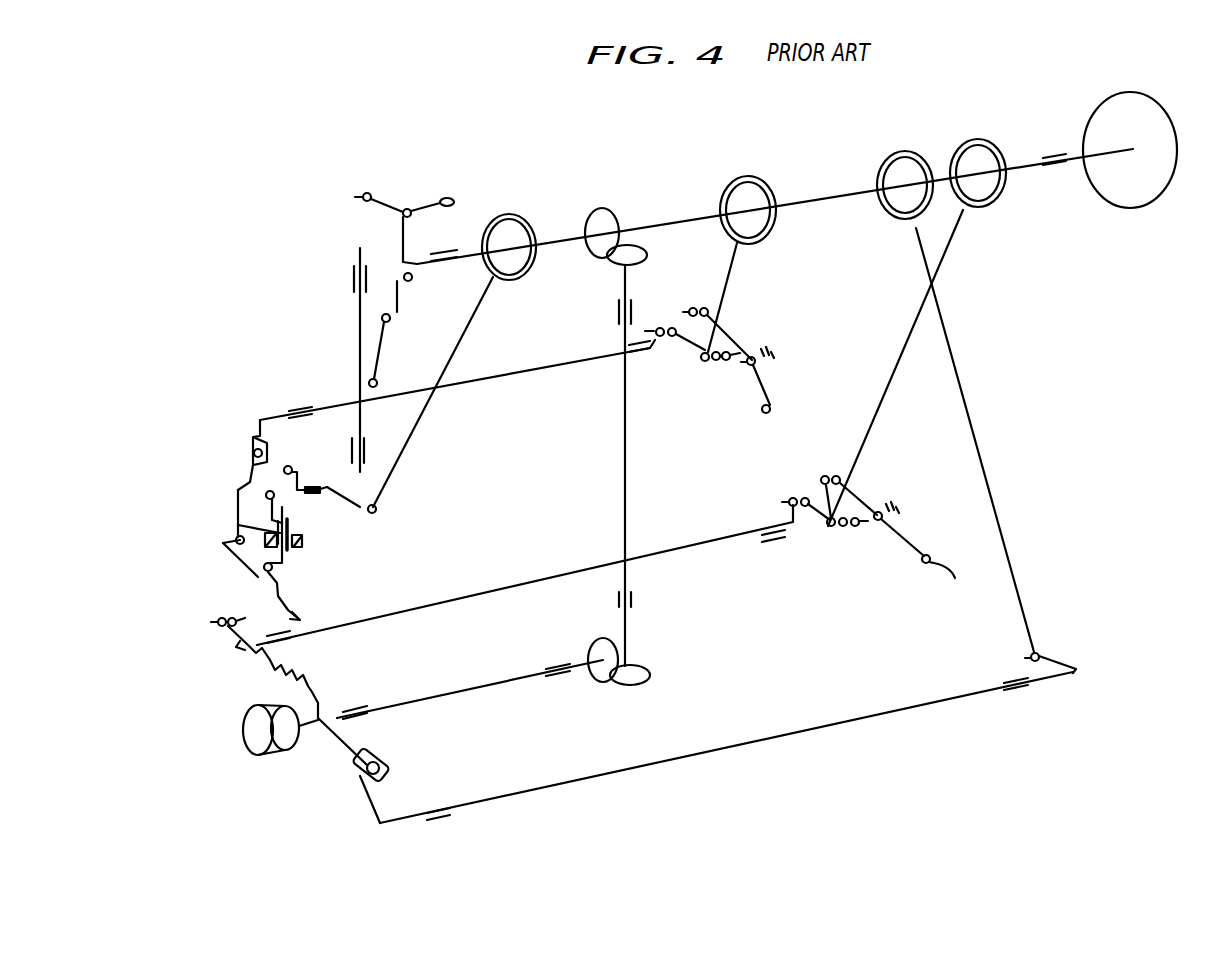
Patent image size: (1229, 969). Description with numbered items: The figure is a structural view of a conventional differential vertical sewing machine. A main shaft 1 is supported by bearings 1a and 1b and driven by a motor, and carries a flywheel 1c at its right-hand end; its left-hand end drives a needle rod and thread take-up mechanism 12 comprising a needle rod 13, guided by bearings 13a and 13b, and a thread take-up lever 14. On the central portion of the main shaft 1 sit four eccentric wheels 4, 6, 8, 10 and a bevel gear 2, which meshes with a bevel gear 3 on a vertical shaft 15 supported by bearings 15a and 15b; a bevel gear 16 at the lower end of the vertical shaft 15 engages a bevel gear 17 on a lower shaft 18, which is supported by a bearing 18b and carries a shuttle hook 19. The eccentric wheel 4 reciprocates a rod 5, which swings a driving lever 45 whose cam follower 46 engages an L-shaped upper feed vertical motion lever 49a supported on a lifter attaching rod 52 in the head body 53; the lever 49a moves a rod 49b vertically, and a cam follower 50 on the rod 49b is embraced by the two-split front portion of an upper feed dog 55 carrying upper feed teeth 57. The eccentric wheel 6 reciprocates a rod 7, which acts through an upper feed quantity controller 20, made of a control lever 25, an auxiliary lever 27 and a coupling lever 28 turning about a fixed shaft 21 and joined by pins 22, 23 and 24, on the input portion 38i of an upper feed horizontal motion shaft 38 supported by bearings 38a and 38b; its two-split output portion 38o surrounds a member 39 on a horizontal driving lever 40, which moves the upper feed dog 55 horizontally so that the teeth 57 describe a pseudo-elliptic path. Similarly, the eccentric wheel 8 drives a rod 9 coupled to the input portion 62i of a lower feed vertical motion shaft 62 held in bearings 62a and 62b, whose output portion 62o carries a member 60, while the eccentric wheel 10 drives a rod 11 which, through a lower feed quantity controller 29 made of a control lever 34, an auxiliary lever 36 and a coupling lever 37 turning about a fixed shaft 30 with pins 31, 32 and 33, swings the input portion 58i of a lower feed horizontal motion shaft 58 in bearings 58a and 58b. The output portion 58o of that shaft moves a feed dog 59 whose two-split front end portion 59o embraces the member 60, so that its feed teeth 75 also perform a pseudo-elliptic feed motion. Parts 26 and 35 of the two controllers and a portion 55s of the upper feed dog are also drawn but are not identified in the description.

The main shaft 1 is at (820, 192).
The bearing 1a is at (440, 254).
The bearing 1b is at (1053, 152).
The flywheel 1c is at (1140, 112).
The bevel gear 2 is at (604, 210).
The bevel gear 3 is at (638, 246).
The eccentric wheel 4 is at (527, 232).
The rod 5 is at (462, 336).
The eccentric wheel 6 is at (752, 186).
The rod 7 is at (738, 265).
The eccentric wheel 8 is at (910, 160).
The rod 9 is at (985, 395).
The eccentric wheel 10 is at (980, 145).
The rod 11 is at (962, 243).
The needle rod and thread take-up mechanism 12 is at (293, 320).
The needle rod 13 is at (358, 320).
The bearing 13a is at (352, 281).
The bearing 13b is at (368, 451).
The thread take-up lever 14 is at (447, 197).
The vertical shaft 15 is at (623, 466).
The bearing 15a is at (617, 311).
The bearing 15b is at (634, 600).
The bevel gear 16 is at (648, 682).
The bevel gear 17 is at (589, 648).
The lower shaft 18 is at (496, 688).
The bearing 18b is at (360, 704).
The shuttle hook 19 is at (243, 724).
The upper feed quantity controller 20 is at (770, 430).
The fixed shaft 21 is at (760, 364).
The pin 22 is at (692, 307).
The pin 23 is at (703, 362).
The pin 24 is at (655, 327).
The control lever 25 is at (726, 337).
The link 26 is at (772, 411).
The auxiliary lever 27 is at (688, 335).
The coupling lever 28 is at (668, 338).
The lower feed quantity controller 29 is at (787, 607).
The fixed shaft 30 is at (882, 512).
The pin 31 is at (827, 476).
The pin 32 is at (832, 528).
The pin 33 is at (791, 498).
The control lever 34 is at (907, 547).
The pivot pin 35 is at (947, 586).
The auxiliary lever 36 is at (822, 504).
The coupling lever 37 is at (824, 521).
The upper feed horizontal motion shaft 38 is at (484, 394).
The bearing 38a is at (298, 405).
The bearing 38b is at (627, 376).
The input portion 38i is at (634, 347).
The output portion 38o is at (255, 436).
The member 39 is at (253, 452).
The horizontal driving lever 40 is at (237, 497).
The driving lever 45 is at (378, 506).
The cam follower 46 is at (291, 466).
The upper feed vertical motion lever 49a is at (300, 515).
The rod 49b is at (286, 558).
The cam follower 50 is at (275, 571).
The lifter attaching rod 52 is at (272, 530).
The head body 53 is at (235, 540).
The upper feed dog 55 is at (232, 560).
The lever surface 55s is at (250, 573).
The upper feed teeth 57 is at (300, 616).
The lower feed horizontal motion shaft 58 is at (550, 575).
The bearing 58a is at (290, 642).
The bearing 58b is at (772, 548).
The input portion 58i is at (783, 524).
The output portion 58o is at (215, 624).
The feed dog 59 is at (242, 648).
The front end portion 59o is at (356, 764).
The member 60 is at (390, 764).
The lower feed vertical motion shaft 62 is at (800, 745).
The bearing 62a is at (445, 818).
The bearing 62b is at (1018, 692).
The input portion 62i is at (1042, 658).
The output portion 62o is at (368, 806).
The feed teeth 75 is at (287, 674).